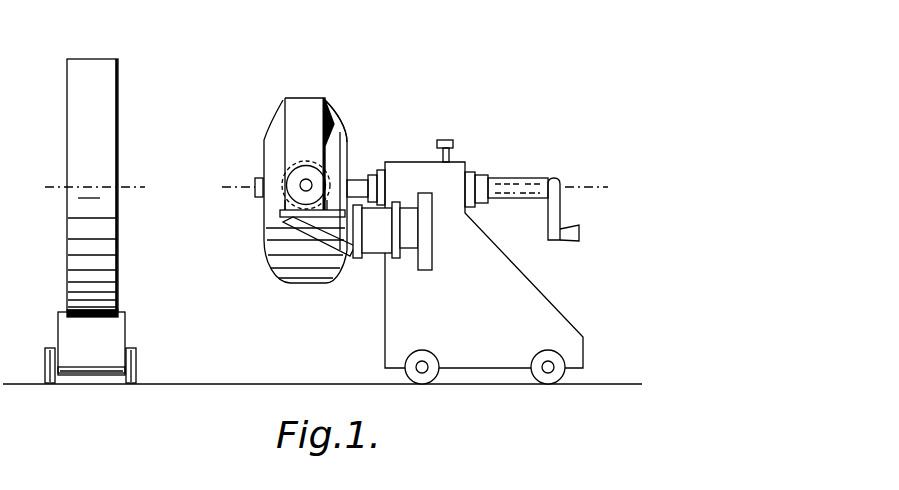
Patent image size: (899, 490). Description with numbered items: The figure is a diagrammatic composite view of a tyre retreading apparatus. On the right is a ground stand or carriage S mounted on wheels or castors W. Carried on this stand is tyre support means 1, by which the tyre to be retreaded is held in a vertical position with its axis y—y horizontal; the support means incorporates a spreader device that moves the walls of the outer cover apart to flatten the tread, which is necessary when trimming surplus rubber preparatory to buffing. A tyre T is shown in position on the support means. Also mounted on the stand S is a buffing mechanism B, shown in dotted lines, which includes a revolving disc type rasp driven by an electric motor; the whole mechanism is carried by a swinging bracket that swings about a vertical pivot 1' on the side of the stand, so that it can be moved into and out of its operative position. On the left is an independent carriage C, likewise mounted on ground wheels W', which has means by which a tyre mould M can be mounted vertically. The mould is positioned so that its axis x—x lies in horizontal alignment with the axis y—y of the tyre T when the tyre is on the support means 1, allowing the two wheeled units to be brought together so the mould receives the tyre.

The tyre mould M is at (92, 171).
The axis x— x is at (91, 187).
The independent carriage C is at (93, 357).
The ground wheels W' is at (107, 365).
The tyre T is at (305, 177).
The buffing mechanism B is at (290, 165).
The tyre support means 1 is at (342, 115).
The vertical pivot 1' is at (392, 198).
The ground stand S is at (481, 315).
The axis y— y is at (415, 188).
The wheels or castors W is at (485, 383).